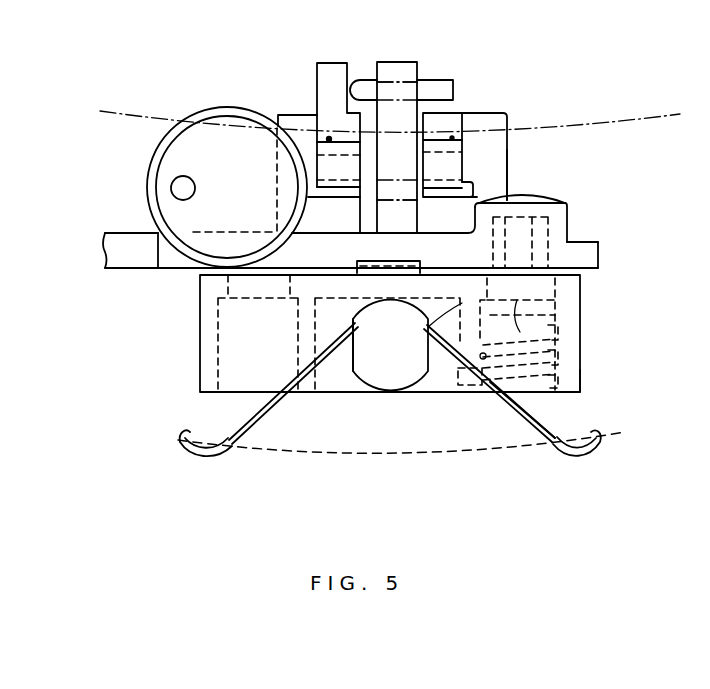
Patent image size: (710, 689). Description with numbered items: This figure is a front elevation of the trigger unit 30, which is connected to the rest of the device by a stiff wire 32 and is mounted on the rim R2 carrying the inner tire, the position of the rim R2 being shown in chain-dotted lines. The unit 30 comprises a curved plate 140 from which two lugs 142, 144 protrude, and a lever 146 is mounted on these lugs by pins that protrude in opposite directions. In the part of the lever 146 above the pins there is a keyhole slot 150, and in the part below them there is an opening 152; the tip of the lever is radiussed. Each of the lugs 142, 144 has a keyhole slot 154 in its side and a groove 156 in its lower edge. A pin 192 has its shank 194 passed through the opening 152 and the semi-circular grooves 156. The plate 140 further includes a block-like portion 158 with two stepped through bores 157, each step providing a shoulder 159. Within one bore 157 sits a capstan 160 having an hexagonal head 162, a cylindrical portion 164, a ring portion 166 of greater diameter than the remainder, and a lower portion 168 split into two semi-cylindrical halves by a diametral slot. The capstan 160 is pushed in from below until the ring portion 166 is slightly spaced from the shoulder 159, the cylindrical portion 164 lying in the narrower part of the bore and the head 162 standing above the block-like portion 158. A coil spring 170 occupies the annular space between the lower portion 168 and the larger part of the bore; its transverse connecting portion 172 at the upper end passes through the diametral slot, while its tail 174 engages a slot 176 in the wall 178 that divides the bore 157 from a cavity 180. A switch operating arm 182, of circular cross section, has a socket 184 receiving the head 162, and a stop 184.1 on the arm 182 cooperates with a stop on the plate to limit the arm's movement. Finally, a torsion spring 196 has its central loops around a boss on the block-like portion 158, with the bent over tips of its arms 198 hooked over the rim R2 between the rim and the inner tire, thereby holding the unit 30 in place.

The trigger unit 30 is at (604, 378).
The stiff wire 32 is at (454, 80).
The curved plate 140 is at (517, 150).
The lug 142 is at (333, 54).
The lug 144 is at (462, 113).
The lever 146 is at (397, 56).
The keyhole slot 150 is at (405, 82).
The opening 152 is at (411, 224).
The keyhole slot 154 is at (329, 138).
The groove 156 is at (435, 175).
The through bore 157 is at (222, 378).
The block-like portion 158 is at (582, 342).
The shoulder 159 is at (289, 302).
The capstan 160 is at (549, 258).
The hexagonal head 162 is at (573, 226).
The cylindrical portion 164 is at (486, 288).
The ring portion 166 is at (582, 294).
The lower portion 168 is at (541, 397).
The coil spring 170 is at (581, 395).
The transverse connecting portion 172 is at (521, 304).
The tail 174 is at (452, 393).
The slot 176 is at (458, 351).
The wall 178 is at (440, 322).
The cavity 180 is at (360, 298).
The switch operating arm 182 is at (127, 232).
The socket 184 is at (569, 207).
The stop 184.1 is at (570, 242).
The pin 192 is at (158, 147).
The shank 194 is at (354, 197).
The torsion spring 196 is at (530, 427).
The arms 198 is at (590, 452).
The rim R2 is at (335, 452).